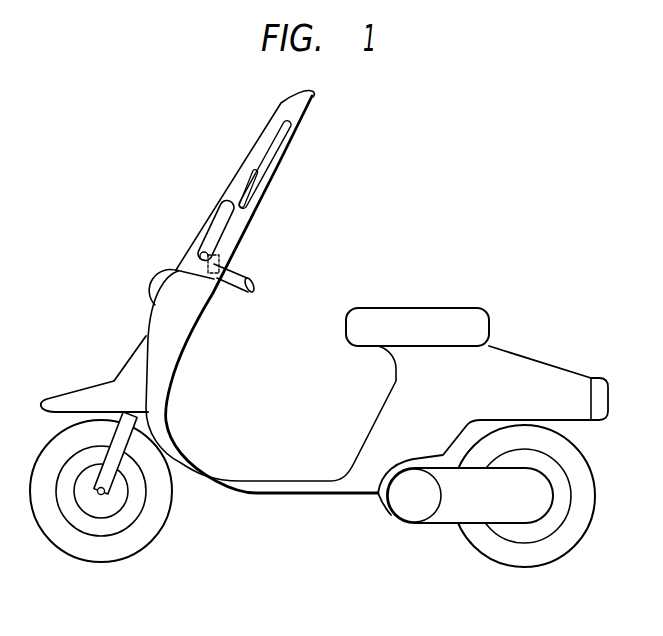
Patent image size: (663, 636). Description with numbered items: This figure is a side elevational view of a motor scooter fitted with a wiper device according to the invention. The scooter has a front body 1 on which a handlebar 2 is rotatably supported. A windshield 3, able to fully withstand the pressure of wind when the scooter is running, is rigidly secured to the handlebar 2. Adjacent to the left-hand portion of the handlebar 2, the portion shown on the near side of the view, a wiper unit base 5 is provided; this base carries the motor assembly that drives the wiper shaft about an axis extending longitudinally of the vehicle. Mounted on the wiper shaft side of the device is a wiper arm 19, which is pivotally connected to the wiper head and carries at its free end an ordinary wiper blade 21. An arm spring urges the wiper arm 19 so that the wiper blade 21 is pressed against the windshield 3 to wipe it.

The front body 1 is at (181, 352).
The handlebar 2 is at (255, 281).
The windshield 3 is at (269, 120).
The wiper unit base 5 is at (220, 256).
The wiper arm 19 is at (213, 217).
The wiper blade 21 is at (263, 154).